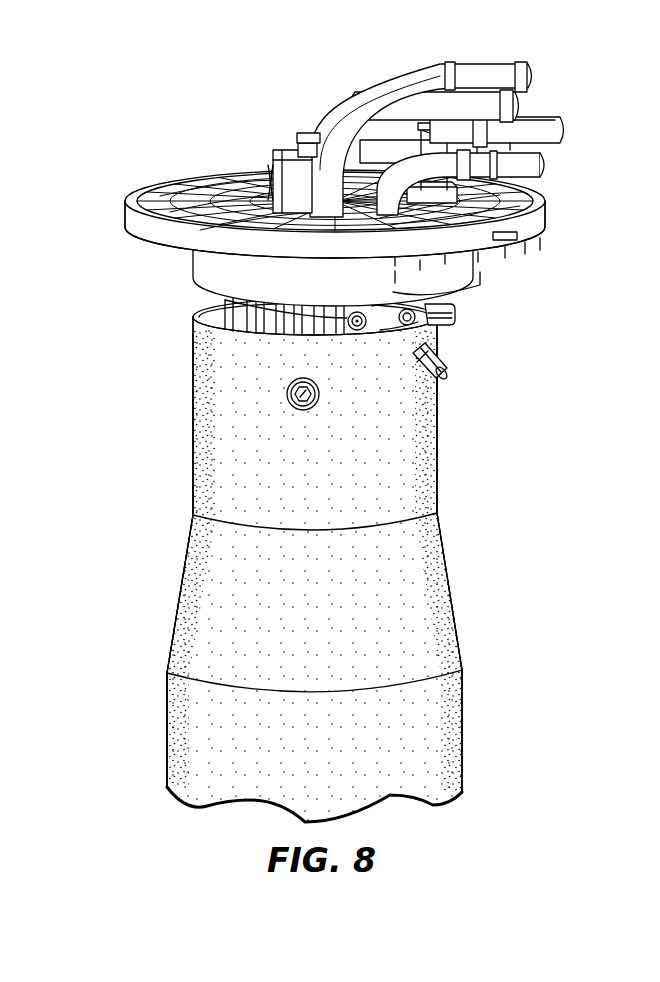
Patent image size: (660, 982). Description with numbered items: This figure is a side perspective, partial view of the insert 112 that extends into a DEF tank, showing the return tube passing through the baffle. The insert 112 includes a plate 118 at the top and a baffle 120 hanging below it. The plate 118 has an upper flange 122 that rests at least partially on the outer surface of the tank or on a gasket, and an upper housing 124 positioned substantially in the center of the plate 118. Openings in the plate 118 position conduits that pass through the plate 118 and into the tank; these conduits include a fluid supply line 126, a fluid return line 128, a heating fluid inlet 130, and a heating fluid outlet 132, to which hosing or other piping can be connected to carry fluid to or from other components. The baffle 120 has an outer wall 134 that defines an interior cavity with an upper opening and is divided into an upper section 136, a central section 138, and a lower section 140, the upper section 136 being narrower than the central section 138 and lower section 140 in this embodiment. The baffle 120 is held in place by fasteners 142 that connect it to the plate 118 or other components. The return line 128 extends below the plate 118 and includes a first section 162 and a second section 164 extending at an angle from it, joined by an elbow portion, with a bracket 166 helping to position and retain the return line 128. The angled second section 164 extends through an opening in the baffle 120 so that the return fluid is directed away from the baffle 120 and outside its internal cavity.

The insert 112 is at (103, 127).
The plate 118 is at (211, 168).
The baffle 120 is at (184, 340).
The upper flange 122 is at (124, 213).
The upper housing 124 is at (303, 137).
The fluid supply line 126 is at (548, 120).
The fluid return line 128 is at (537, 165).
The heating fluid inlet 130 is at (407, 72).
The heating fluid outlet 132 is at (355, 117).
The outer wall 134 is at (457, 613).
The upper section 136 is at (217, 468).
The central section 138 is at (202, 623).
The lower section 140 is at (192, 755).
The fastener 142 is at (290, 404).
The first section 162 is at (423, 294).
The second section 164 is at (453, 358).
The bracket 166 is at (449, 318).